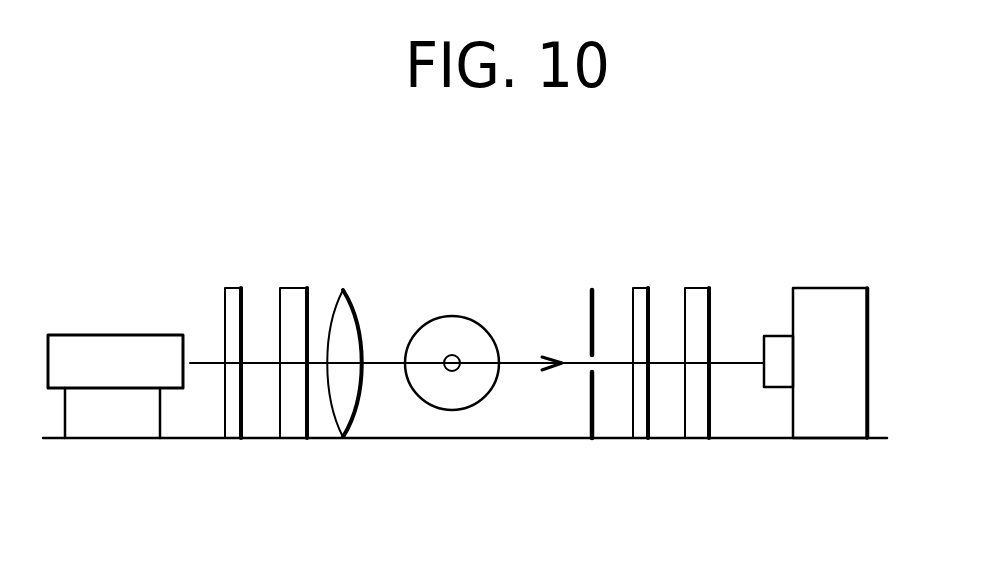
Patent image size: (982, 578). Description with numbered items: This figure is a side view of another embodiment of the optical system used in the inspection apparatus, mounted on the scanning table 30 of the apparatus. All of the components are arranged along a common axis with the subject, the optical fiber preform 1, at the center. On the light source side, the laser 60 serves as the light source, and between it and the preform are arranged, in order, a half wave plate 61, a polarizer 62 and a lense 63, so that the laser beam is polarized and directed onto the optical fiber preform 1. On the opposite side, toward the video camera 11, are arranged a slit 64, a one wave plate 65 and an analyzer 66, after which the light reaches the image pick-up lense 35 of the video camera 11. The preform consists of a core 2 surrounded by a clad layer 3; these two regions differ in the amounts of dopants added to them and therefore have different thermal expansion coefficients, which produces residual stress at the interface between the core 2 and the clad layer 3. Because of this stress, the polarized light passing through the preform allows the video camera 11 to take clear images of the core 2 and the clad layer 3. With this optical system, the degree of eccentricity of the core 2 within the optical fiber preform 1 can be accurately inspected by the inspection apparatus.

The optical fiber preform 1 is at (460, 281).
The core 2 is at (452, 355).
The clad layer 3 is at (468, 333).
The video camera 11 is at (840, 303).
The scanning table 30 is at (484, 507).
The image pick-up lense 35 is at (778, 343).
The laser 60 is at (120, 348).
The half wave plate 61 is at (233, 297).
The polarizer 62 is at (295, 297).
The lense 63 is at (345, 305).
The slit 64 is at (590, 297).
The one wave plate 65 is at (642, 295).
The analyzer 66 is at (700, 297).